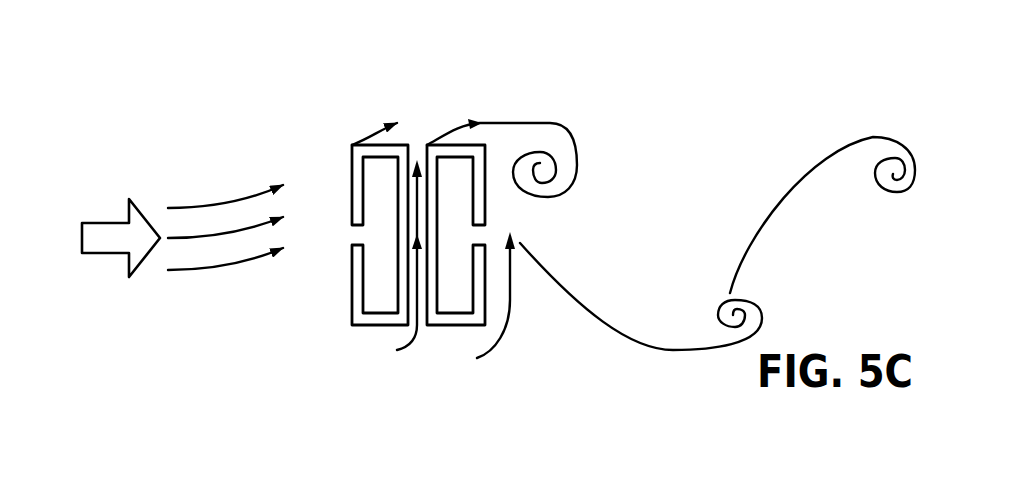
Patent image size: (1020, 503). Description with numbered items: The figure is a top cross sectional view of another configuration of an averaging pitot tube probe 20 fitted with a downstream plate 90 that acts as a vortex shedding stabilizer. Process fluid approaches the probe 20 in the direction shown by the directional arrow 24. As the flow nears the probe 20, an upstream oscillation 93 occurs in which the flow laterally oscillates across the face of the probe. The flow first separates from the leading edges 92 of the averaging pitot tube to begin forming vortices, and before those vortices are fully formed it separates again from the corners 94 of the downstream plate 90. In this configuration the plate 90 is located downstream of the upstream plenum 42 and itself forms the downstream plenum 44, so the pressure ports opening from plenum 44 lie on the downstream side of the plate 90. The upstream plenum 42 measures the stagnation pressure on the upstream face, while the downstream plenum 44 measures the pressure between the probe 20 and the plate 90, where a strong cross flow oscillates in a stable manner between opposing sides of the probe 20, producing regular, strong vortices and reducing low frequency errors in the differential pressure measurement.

The differential pressure measuring probe 20 is at (318, 122).
The directional arrow 24 is at (140, 248).
The upstream plenum 42 is at (373, 278).
The downstream plenum 44 is at (458, 293).
The plate 90 is at (473, 323).
The leading edges 92 is at (350, 146).
The upstream oscillation 93 is at (225, 182).
The corners 94 is at (426, 143).